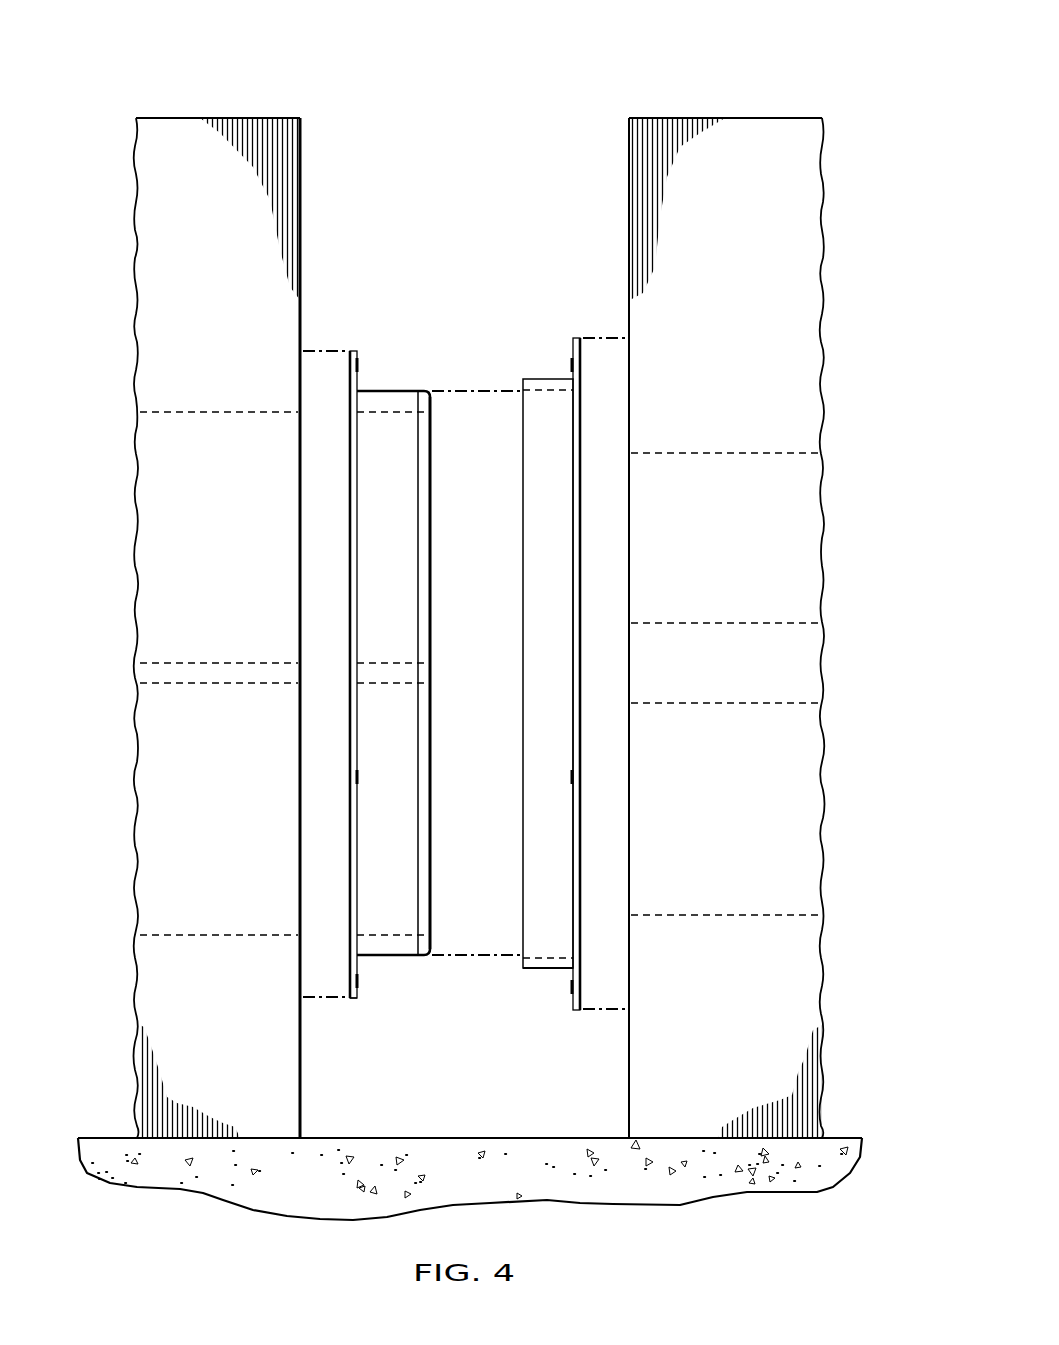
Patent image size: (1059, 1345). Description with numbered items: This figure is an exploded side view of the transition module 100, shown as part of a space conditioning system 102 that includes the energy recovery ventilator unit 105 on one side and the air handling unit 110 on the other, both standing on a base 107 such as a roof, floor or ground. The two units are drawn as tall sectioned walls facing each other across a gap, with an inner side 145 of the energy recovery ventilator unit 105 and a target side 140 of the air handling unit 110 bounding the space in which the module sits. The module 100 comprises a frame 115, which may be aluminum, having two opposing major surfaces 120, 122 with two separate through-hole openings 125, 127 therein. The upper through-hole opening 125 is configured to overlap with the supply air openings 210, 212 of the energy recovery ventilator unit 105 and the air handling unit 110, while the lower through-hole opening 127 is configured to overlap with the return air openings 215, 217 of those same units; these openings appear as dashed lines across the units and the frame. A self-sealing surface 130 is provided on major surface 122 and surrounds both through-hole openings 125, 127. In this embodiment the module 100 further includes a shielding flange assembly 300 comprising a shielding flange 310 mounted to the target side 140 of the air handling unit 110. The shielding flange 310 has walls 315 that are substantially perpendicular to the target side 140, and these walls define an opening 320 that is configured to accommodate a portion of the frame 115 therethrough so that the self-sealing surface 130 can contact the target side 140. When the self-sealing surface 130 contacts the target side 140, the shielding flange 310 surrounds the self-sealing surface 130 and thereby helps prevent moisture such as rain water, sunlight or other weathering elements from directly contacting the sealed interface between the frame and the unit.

The transition module 100 is at (397, 626).
The space conditioning system 102 is at (812, 57).
The energy recovery ventilator unit 105 is at (218, 597).
The base 107 is at (486, 1137).
The air handling unit 110 is at (721, 597).
The frame 115 is at (386, 391).
The major surface 120 is at (361, 960).
The major surface 122 is at (432, 808).
The through-hole opening 125 is at (396, 455).
The through-hole opening 127 is at (393, 728).
The self-sealing surface 130 is at (432, 884).
The target side 140 is at (627, 165).
The first wall inner surface 145 is at (302, 163).
The supply air opening 210 is at (175, 463).
The supply air opening 212 is at (780, 499).
The return air opening 215 is at (175, 735).
The return air opening 217 is at (780, 767).
The second blocker shield assembly 300 is at (529, 638).
The shielding flange 310 is at (541, 378).
The walls 315 is at (545, 970).
The opening 320 is at (556, 507).